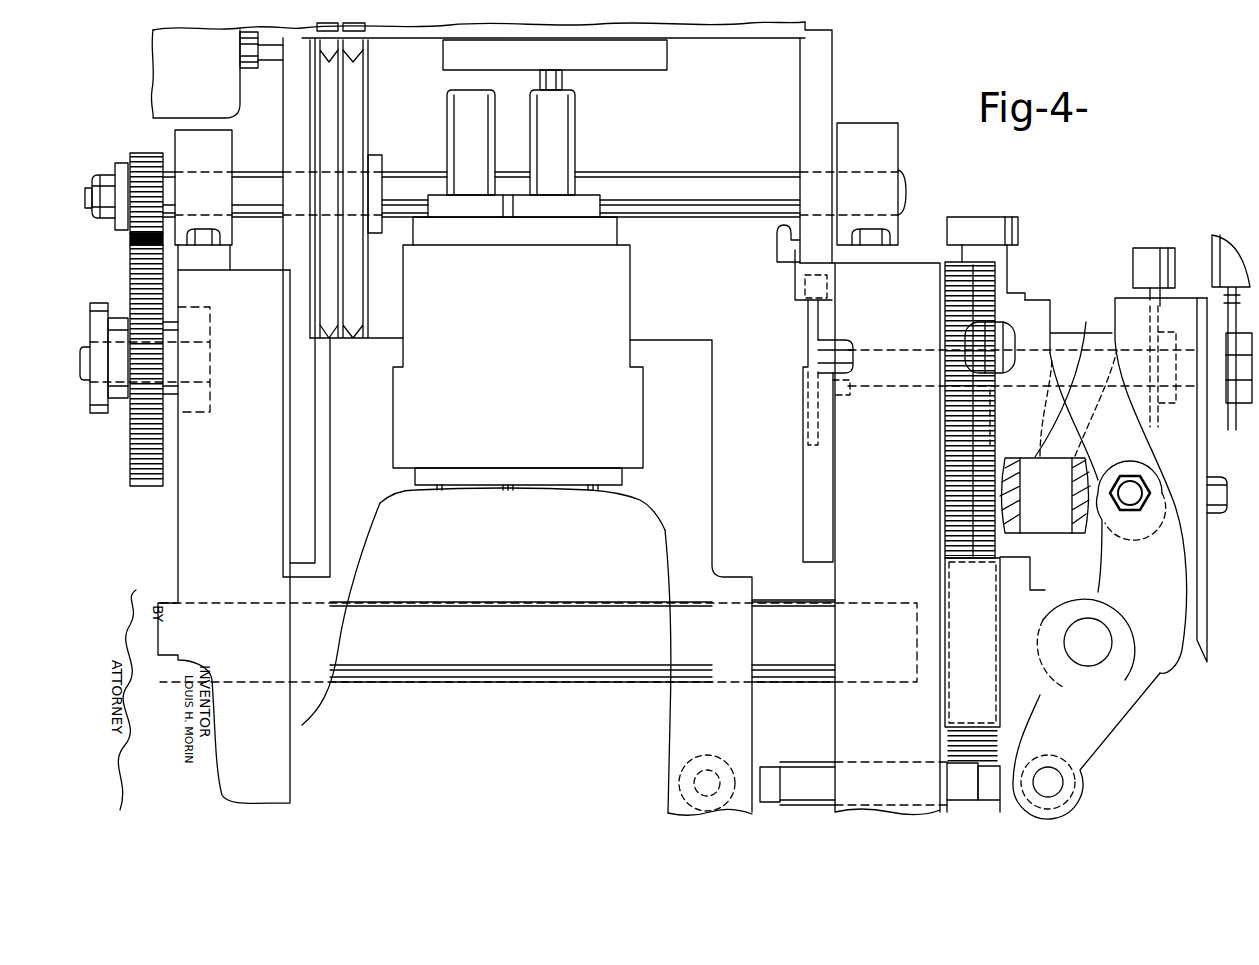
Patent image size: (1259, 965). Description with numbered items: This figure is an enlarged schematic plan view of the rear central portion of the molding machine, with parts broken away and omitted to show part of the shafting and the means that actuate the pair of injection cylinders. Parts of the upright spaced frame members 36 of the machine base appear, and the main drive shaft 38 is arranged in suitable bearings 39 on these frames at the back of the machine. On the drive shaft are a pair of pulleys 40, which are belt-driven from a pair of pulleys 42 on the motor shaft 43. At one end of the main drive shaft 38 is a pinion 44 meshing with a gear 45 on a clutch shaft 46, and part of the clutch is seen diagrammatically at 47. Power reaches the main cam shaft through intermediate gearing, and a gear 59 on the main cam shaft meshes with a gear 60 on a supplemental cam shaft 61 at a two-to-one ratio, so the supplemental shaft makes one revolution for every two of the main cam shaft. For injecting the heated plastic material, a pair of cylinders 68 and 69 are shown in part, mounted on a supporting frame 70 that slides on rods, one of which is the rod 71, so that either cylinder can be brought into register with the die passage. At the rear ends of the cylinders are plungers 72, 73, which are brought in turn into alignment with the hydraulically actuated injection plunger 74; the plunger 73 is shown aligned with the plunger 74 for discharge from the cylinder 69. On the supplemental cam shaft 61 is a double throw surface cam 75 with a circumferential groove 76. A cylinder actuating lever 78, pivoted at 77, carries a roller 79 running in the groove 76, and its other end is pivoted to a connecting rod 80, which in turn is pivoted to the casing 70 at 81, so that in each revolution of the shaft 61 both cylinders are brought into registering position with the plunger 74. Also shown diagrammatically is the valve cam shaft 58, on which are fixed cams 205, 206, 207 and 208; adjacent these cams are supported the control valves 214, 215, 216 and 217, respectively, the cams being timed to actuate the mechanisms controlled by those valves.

The upright spaced frame members 36 is at (185, 536).
The main drive shaft 38 is at (683, 172).
The bearings 39 is at (222, 142).
The pulleys 40 is at (332, 142).
The pulleys 42 is at (330, 48).
The motor shaft 43 is at (272, 50).
The pinion 44 is at (142, 153).
The gear 45 is at (140, 277).
The clutch shaft 46 is at (84, 352).
The clutch 47 is at (108, 400).
The valve cam shaft 58 is at (852, 350).
The gear 59 is at (1017, 770).
The gear 60 is at (947, 518).
The supplemental cam shaft 61 is at (1222, 512).
The cylinder 68 is at (405, 488).
The cylinder 69 is at (640, 489).
The supporting frame 70 is at (702, 539).
The rod 71 is at (778, 609).
The plunger 72 is at (452, 126).
The plunger 73 is at (570, 154).
The injection plunger 74 is at (567, 78).
The double throw surface cam 75 is at (1045, 306).
The circumferential groove 76 is at (1058, 420).
The pivot 77 is at (1090, 662).
The cylinder actuating lever 78 is at (1170, 626).
The roller 79 is at (1162, 520).
The connecting rod 80 is at (967, 760).
The pivot 81 is at (717, 769).
The cam 205 is at (1238, 416).
The cam 206 is at (1148, 312).
The cam 207 is at (975, 360).
The cam 208 is at (810, 333).
The control valve 214 is at (1220, 241).
The control valve 215 is at (1155, 249).
The control valve 216 is at (990, 219).
The control valve 217 is at (778, 250).